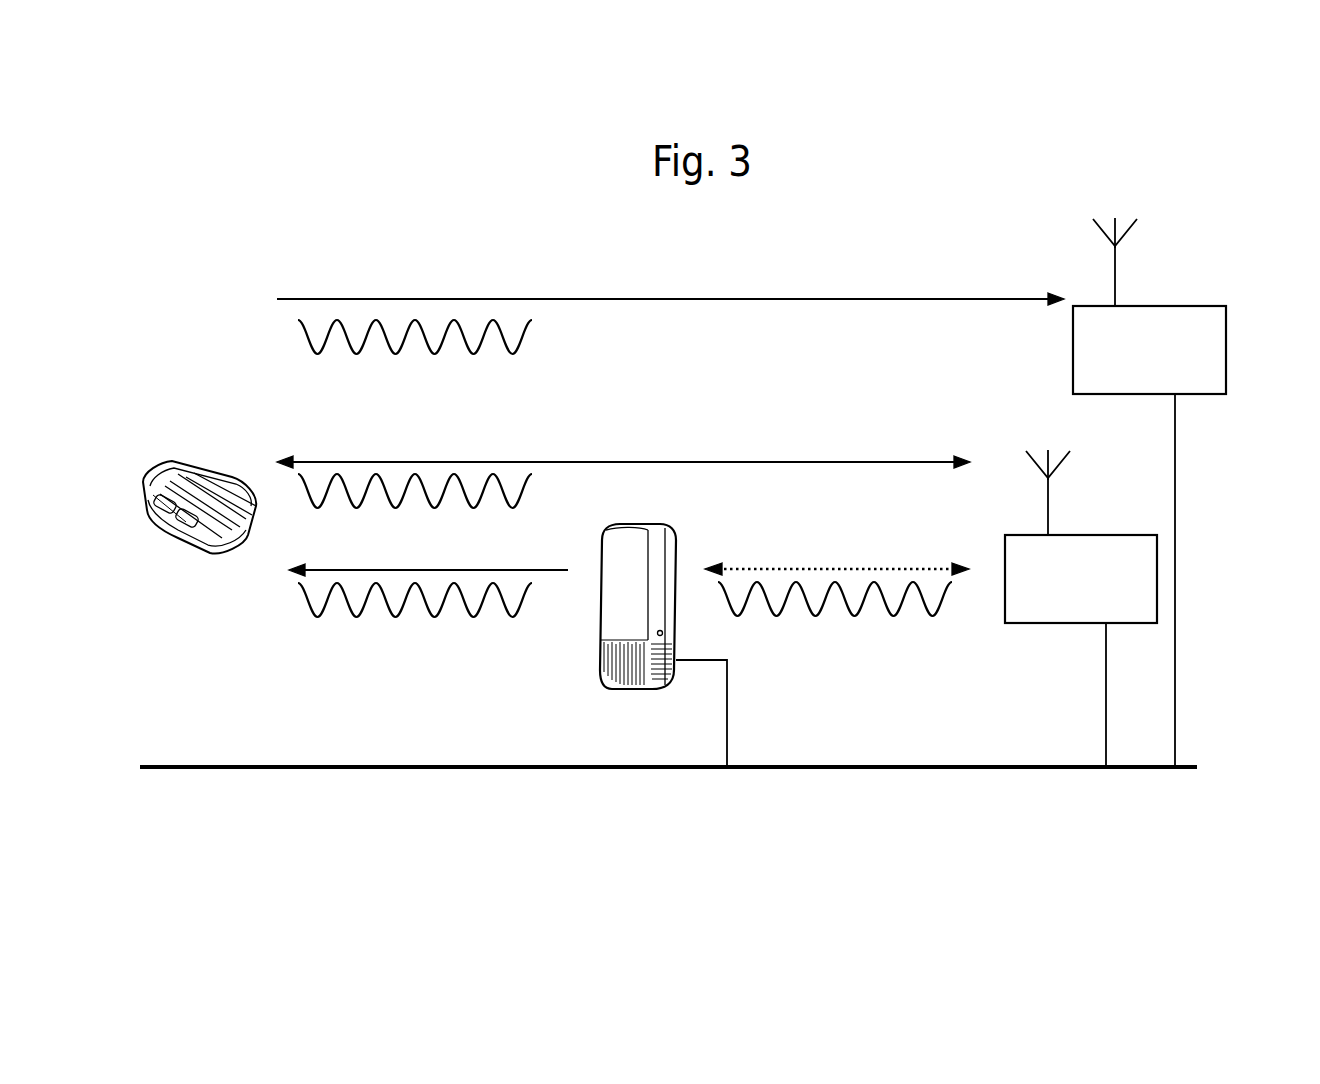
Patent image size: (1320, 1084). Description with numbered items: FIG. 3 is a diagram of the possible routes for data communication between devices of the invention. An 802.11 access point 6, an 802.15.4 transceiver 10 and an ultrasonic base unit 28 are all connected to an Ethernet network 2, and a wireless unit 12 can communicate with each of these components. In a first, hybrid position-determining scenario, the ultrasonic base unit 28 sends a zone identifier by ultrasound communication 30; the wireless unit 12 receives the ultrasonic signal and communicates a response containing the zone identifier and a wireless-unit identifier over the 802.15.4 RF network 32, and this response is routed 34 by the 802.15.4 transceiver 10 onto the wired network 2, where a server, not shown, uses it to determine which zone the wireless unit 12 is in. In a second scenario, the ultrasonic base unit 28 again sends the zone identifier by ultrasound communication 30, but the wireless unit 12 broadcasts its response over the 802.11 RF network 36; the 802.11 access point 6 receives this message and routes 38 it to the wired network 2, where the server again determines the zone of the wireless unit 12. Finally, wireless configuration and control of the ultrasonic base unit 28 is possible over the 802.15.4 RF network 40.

The Ethernet network 2 is at (465, 770).
The 802.11 access point 6 is at (1194, 350).
The 802.15.4 transceiver 10 is at (1056, 604).
The wireless unit 12 is at (207, 488).
The ultrasonic base unit 28 is at (608, 605).
The ultrasound communication 30 is at (464, 570).
The 802.15.4 RF network 32 is at (713, 461).
The routing to wired network 34 is at (1106, 720).
The 802.11 RF network 36 is at (727, 297).
The routing to wired network 38 is at (1175, 505).
The 802.15.4 RF network 40 is at (829, 568).